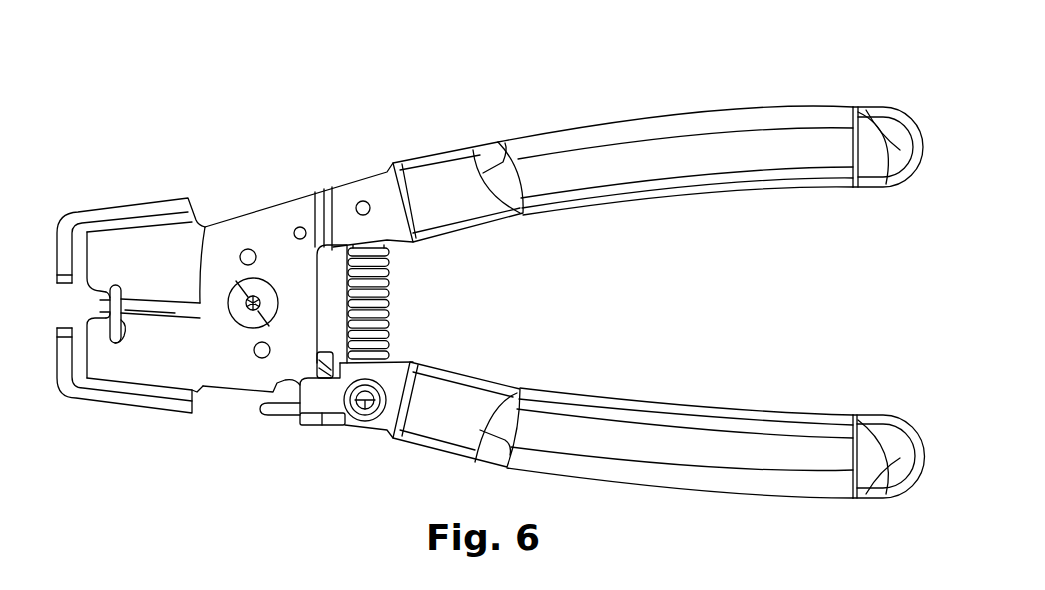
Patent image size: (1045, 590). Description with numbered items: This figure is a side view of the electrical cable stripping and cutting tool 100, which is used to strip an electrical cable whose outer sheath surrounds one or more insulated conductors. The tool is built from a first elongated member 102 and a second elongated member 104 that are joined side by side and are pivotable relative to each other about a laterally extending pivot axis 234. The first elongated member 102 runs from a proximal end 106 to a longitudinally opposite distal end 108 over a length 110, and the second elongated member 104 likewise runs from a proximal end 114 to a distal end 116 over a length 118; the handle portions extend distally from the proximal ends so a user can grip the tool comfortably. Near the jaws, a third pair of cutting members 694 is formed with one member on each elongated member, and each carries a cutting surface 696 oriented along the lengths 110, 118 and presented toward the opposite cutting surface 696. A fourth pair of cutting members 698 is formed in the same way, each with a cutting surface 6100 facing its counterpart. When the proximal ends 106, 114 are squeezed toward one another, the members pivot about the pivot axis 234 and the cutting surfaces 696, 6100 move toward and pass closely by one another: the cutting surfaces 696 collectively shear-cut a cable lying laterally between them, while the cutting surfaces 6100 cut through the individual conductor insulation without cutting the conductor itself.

The electrical cable stripping and cutting tool 100 is at (650, 72).
The first elongated member 102 is at (730, 140).
The second elongated member 104 is at (775, 462).
The proximal end 106 is at (908, 100).
The distal end 108 is at (114, 383).
The length 110 is at (436, 179).
The proximal end 114 is at (908, 411).
The distal end 116 is at (131, 228).
The length 118 is at (428, 438).
The pivot axis 234 is at (266, 290).
The third pair of cutting members 694 is at (163, 331).
The cutting surface 696 is at (180, 290).
The fourth pair of cutting members 698 is at (98, 341).
The cutting surface 6100 is at (102, 280).